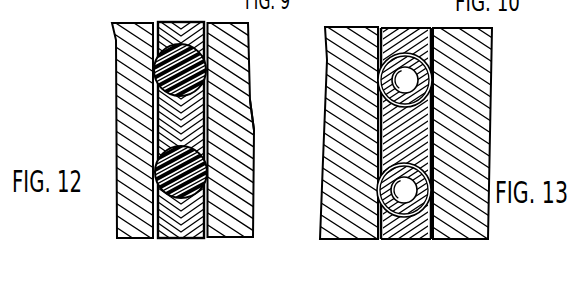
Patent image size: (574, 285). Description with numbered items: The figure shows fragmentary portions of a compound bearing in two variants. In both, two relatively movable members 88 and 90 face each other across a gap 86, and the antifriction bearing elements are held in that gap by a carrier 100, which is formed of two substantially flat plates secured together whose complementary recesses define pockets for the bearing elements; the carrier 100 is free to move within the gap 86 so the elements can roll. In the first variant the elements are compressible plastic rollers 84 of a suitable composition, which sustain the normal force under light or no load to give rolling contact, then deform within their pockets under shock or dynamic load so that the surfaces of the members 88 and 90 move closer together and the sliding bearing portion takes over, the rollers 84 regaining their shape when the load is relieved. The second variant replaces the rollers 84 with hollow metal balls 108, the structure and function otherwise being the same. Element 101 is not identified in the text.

In FIG. 12, the rollers 84 is at (207, 170).
In FIG. 12, the gap 86 is at (202, 22).
In FIG. 13, the gap 86 is at (430, 30).
In FIG. 12, the relatively movable member 88 is at (243, 223).
In FIG. 13, the relatively movable member 88 is at (490, 110).
In FIG. 12, the relatively movable member 90 is at (118, 87).
In FIG. 13, the relatively movable member 90 is at (327, 47).
In FIG. 12, the carrier 100 is at (160, 123).
In FIG. 13, the elastomeric insert 101 is at (386, 137).
In FIG. 13, the hollow balls 108 is at (378, 73).